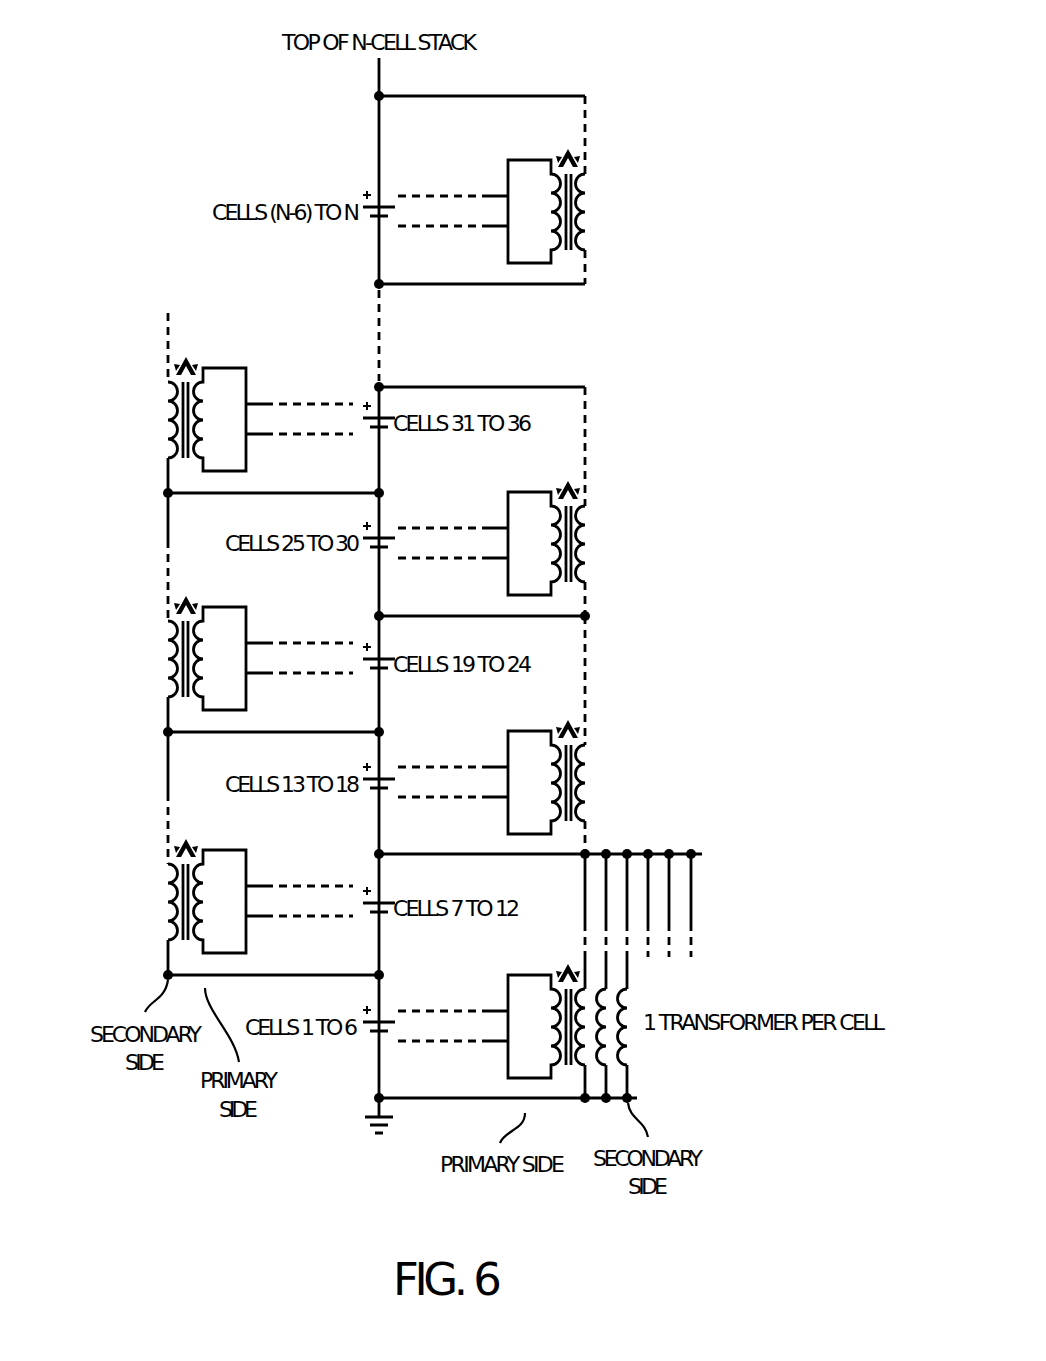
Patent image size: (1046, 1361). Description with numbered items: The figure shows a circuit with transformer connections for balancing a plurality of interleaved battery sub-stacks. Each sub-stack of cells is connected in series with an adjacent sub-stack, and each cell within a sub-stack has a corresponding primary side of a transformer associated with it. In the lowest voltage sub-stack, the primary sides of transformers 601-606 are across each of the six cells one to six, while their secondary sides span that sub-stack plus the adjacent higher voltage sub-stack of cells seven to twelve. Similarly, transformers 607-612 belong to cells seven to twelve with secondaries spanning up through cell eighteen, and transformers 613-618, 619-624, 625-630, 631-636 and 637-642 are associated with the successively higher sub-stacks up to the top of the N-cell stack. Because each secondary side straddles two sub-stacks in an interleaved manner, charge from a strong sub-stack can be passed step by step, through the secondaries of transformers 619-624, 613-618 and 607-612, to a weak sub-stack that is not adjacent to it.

The transformers 601-606 is at (572, 976).
The transformers 607-612 is at (199, 853).
The transformers 613-618 is at (552, 735).
The transformers 619-624 is at (199, 612).
The transformers 625-630 is at (552, 501).
The transformers 631-636 is at (199, 403).
The transformers 637-642 is at (552, 190).